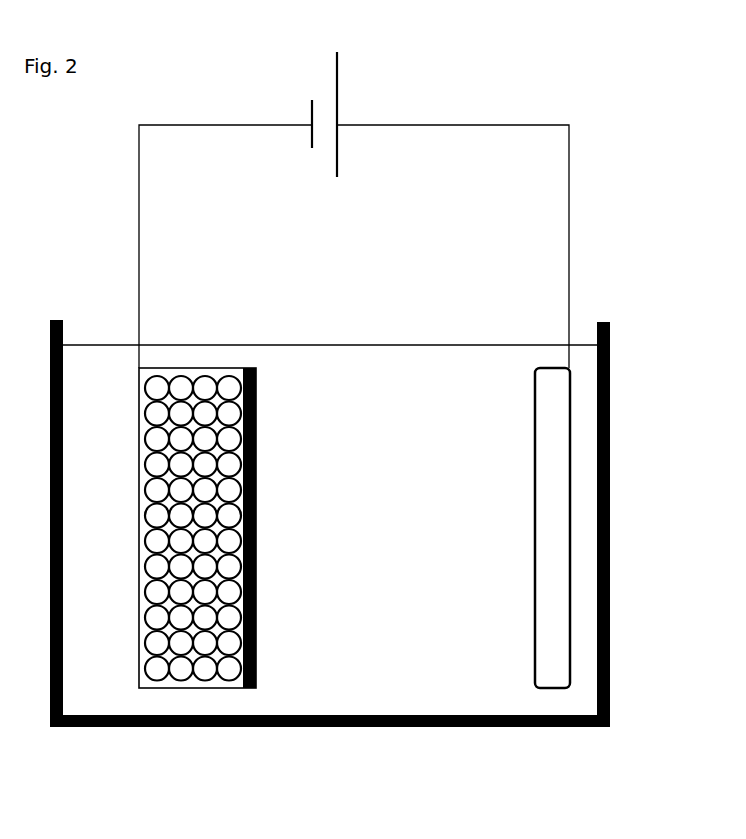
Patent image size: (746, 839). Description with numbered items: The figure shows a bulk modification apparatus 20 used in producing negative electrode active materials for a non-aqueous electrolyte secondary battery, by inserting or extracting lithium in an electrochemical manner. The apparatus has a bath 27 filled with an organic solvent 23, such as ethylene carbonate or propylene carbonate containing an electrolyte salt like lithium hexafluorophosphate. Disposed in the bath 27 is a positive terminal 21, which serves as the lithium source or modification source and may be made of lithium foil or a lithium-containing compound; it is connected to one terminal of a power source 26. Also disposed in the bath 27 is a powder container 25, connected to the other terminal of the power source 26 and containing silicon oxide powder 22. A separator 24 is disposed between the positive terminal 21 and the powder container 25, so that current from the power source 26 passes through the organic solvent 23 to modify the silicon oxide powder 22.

The bulk modification apparatus 20 is at (594, 97).
The positive terminal 21 is at (545, 545).
The silicon oxide powder 22 is at (207, 588).
The organic solvent 23 is at (328, 376).
The separator 24 is at (257, 505).
The powder container 25 is at (188, 368).
The power source 26 is at (343, 148).
The bath 27 is at (267, 727).